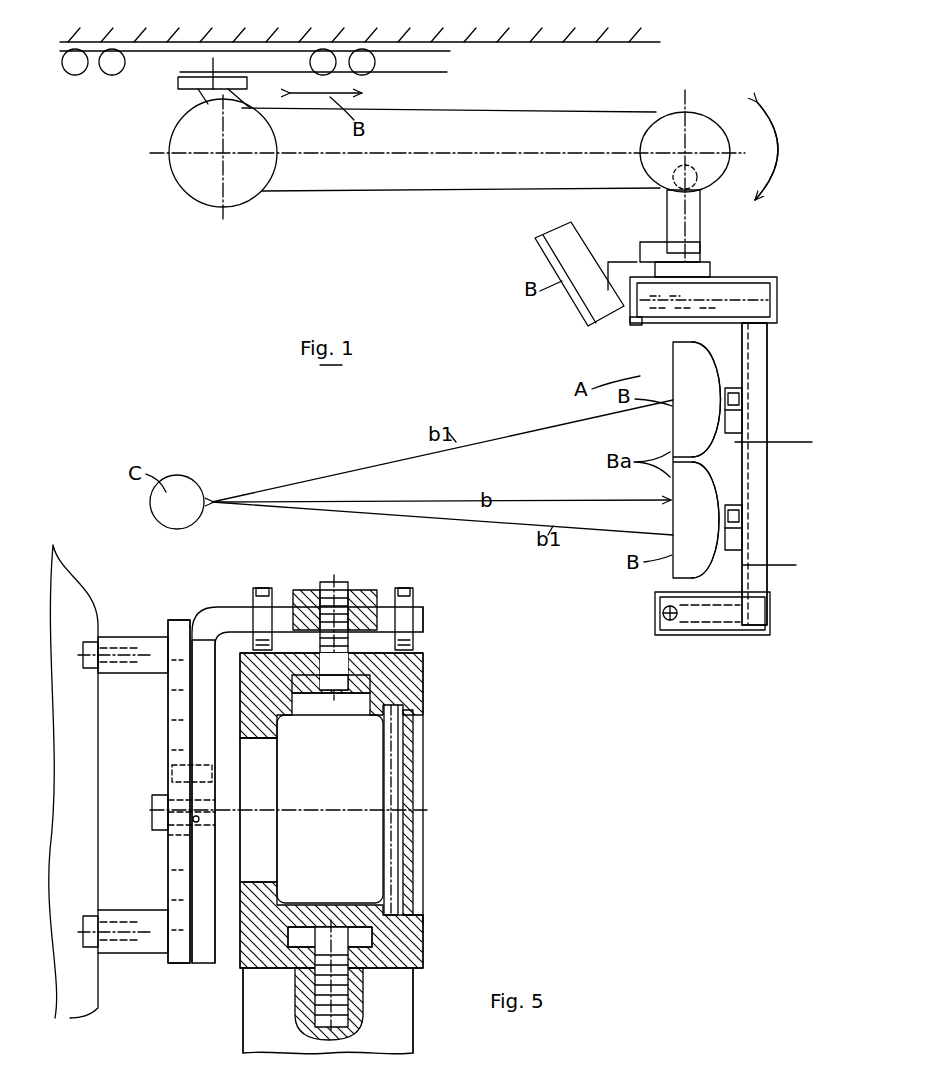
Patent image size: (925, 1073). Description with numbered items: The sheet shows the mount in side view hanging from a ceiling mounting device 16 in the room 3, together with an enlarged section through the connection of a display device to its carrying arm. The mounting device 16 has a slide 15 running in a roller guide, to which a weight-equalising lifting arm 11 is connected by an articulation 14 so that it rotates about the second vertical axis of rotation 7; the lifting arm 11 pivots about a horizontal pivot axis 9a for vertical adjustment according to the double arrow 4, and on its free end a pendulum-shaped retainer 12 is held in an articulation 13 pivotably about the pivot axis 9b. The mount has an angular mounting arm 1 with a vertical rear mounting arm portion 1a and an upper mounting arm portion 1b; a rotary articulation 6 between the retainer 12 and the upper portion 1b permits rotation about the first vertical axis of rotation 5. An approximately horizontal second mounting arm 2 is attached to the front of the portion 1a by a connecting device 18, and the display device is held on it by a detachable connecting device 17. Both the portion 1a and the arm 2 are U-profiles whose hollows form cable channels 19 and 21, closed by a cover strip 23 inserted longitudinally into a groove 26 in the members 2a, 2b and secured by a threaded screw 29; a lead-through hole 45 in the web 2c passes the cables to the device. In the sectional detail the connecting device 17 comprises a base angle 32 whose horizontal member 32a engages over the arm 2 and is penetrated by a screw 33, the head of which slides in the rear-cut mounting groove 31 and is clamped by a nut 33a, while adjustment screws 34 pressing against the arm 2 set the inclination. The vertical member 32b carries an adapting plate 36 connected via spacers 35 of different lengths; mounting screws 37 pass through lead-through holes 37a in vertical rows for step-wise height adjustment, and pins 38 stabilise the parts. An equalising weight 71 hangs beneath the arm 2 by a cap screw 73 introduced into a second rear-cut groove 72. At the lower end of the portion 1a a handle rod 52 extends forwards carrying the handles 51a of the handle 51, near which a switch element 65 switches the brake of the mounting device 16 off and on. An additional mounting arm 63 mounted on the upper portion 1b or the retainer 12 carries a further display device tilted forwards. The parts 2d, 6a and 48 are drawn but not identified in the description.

In FIG. 1, the mounting arm 1 is at (778, 280).
In FIG. 1, the rear mounting arm portion 1a is at (768, 470).
In FIG. 1, the upper mounting arm portion 1b is at (638, 330).
In FIG. 1, the second mounting arm 2 is at (722, 398).
In FIG. 5, the second mounting arm 2 is at (424, 650).
In FIG. 5, the upper member 2a is at (424, 690).
In FIG. 5, the lower member 2b is at (420, 940).
In FIG. 5, the web 2c is at (270, 856).
In FIG. 5, the housing side wall 2d is at (424, 915).
In FIG. 1, the room 3 is at (334, 455).
In FIG. 1, the double arrow 4 is at (776, 160).
In FIG. 1, the first vertical axis of rotation 5 is at (684, 92).
In FIG. 1, the rotary articulation 6 is at (710, 264).
In FIG. 1, the bracket clamp 6a is at (703, 242).
In FIG. 1, the second vertical axis of rotation 7 is at (210, 70).
In FIG. 1, the horizontal pivot axis 9a is at (212, 160).
In FIG. 1, the pivot axis 9b is at (672, 160).
In FIG. 1, the lifting arm 11 is at (460, 190).
In FIG. 1, the retainer 12 is at (700, 210).
In FIG. 1, the articulation 13 is at (722, 118).
In FIG. 1, the articulation 14 is at (182, 97).
In FIG. 1, the slide 15 is at (236, 58).
In FIG. 1, the mounting device 16 is at (330, 195).
In FIG. 1, the connecting device 17 is at (718, 390).
In FIG. 5, the connecting device 17 is at (166, 764).
In FIG. 1, the connecting device 18 is at (742, 390).
In FIG. 1, the cable channel 19 is at (742, 410).
In FIG. 5, the cable channel 21 is at (338, 784).
In FIG. 5, the cover strip 23 is at (414, 780).
In FIG. 5, the groove 26 is at (404, 708).
In FIG. 5, the threaded screw 29 is at (414, 990).
In FIG. 5, the mounting groove 31 is at (405, 680).
In FIG. 5, the base angle 32 is at (215, 603).
In FIG. 5, the horizontal member 32a is at (424, 606).
In FIG. 5, the vertical member 32b is at (204, 963).
In FIG. 5, the screw 33 is at (322, 700).
In FIG. 5, the nut 33a is at (322, 588).
In FIG. 5, the adjustment screws 34 is at (255, 590).
In FIG. 5, the spacers 35 is at (124, 636).
In FIG. 5, the adapting plate 36 is at (178, 963).
In FIG. 5, the mounting screws 37 is at (152, 812).
In FIG. 5, the lead-through holes 37a is at (180, 835).
In FIG. 5, the pins 38 is at (170, 777).
In FIG. 5, the lead-through hole 45 is at (262, 830).
In FIG. 1, the guide element 48 is at (656, 325).
In FIG. 1, the handle 51 is at (700, 640).
In FIG. 1, the handle 51a is at (670, 640).
In FIG. 1, the handle rod 52 is at (725, 640).
In FIG. 1, the additional mounting arm 63 is at (614, 262).
In FIG. 1, the switch element 65 is at (655, 622).
In FIG. 1, the equalising weight 71 is at (788, 508).
In FIG. 5, the equalising weight 71 is at (414, 1020).
In FIG. 5, the second rear-cut groove 72 is at (372, 947).
In FIG. 5, the cap screw 73 is at (360, 1000).